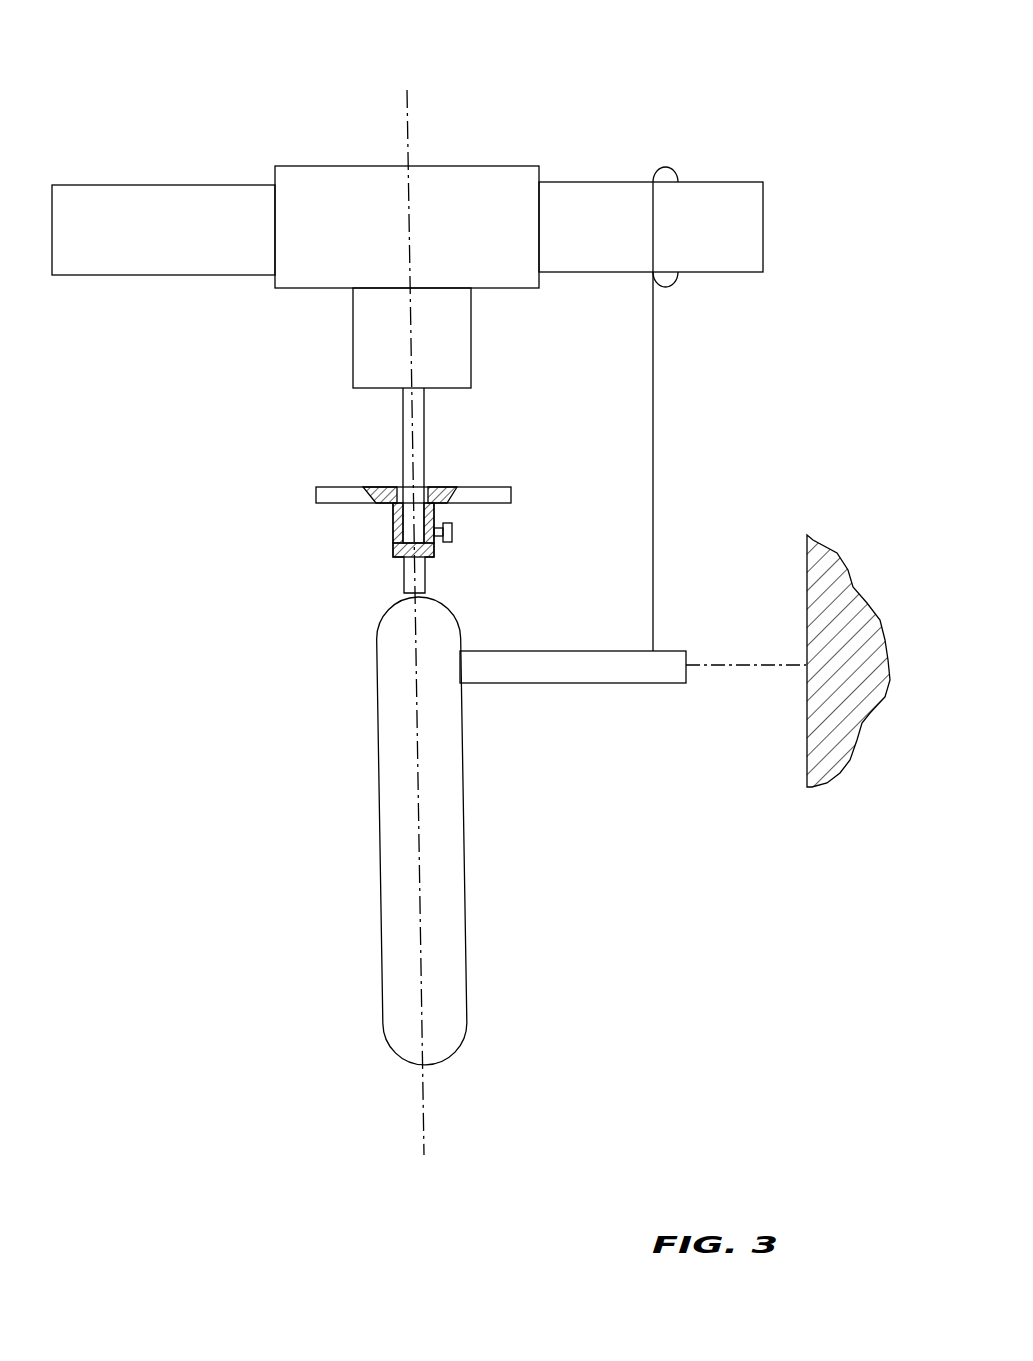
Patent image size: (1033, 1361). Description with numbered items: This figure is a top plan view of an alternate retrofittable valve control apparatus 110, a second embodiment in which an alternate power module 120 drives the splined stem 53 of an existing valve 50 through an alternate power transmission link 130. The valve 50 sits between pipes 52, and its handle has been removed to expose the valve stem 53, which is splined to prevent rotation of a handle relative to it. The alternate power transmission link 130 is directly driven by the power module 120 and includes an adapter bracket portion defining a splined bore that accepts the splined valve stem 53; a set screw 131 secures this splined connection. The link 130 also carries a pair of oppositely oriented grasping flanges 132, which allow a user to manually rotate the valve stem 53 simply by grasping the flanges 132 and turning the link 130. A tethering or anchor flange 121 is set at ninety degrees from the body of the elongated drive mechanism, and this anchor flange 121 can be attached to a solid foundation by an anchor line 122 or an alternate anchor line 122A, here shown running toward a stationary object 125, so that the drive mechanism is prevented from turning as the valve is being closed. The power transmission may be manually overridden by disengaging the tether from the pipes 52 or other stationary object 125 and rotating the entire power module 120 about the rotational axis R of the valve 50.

The valve 50 is at (457, 185).
The pipes 52 is at (186, 257).
The splined stem 53 is at (403, 420).
The alternate retrofittable valve control apparatus 110 is at (243, 793).
The alternate power module 120 is at (397, 892).
The anchor flange 121 is at (524, 683).
The anchor line 122 is at (657, 443).
The alternate anchor line 122A is at (740, 668).
The stationary object 125 is at (810, 767).
The alternate power transmission link 130 is at (388, 528).
The set screw 131 is at (453, 532).
The grasping flanges 132 is at (482, 487).
The rotational axis R is at (426, 1102).